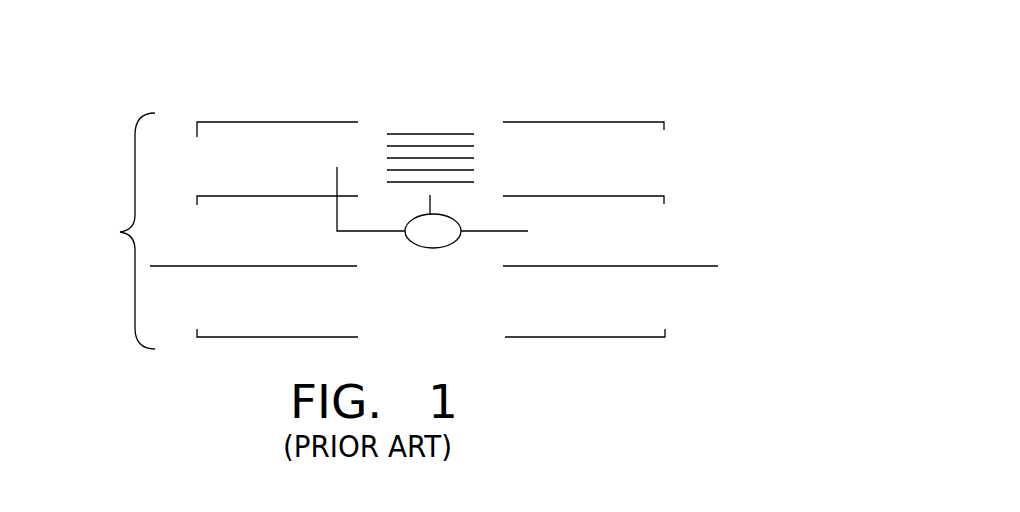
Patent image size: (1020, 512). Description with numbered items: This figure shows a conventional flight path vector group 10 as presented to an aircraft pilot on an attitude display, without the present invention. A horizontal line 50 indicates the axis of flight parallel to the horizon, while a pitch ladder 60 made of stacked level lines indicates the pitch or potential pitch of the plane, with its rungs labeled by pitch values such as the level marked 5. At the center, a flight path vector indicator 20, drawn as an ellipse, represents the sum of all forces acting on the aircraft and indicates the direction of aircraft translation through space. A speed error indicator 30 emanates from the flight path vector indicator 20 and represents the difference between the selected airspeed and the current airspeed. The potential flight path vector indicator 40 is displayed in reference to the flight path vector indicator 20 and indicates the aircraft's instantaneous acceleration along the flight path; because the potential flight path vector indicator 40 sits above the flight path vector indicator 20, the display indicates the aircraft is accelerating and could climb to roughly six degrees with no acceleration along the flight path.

The flight path vector group 10 is at (138, 62).
The energy level 5 / - 5 is at (690, 330).
The flight path vector indicator 20 is at (433, 248).
The speed error indicator 30 is at (334, 213).
The potential flight path vector indicator 40 is at (334, 182).
The horizontal line 50 is at (665, 265).
The pitch ladder 60 is at (120, 232).